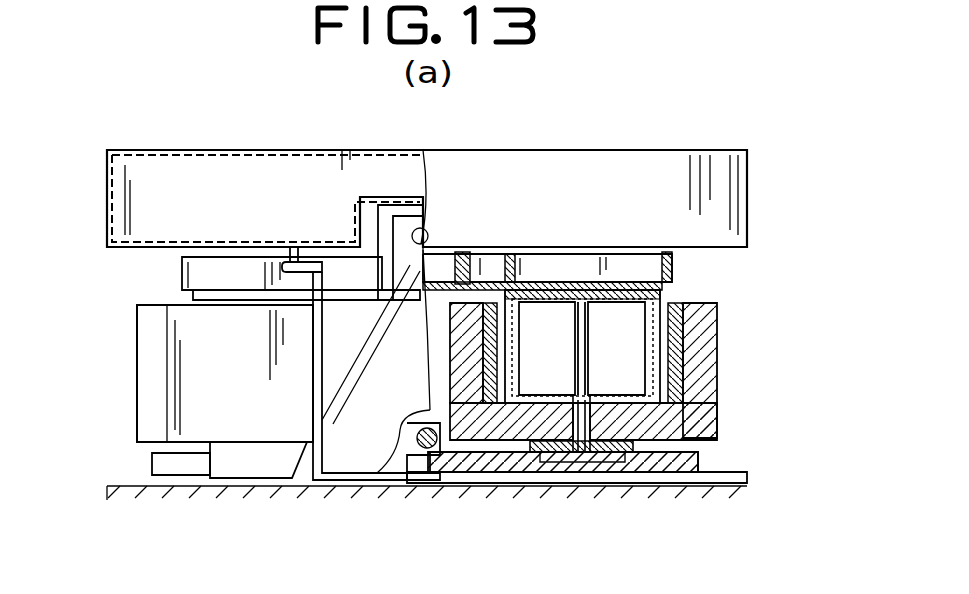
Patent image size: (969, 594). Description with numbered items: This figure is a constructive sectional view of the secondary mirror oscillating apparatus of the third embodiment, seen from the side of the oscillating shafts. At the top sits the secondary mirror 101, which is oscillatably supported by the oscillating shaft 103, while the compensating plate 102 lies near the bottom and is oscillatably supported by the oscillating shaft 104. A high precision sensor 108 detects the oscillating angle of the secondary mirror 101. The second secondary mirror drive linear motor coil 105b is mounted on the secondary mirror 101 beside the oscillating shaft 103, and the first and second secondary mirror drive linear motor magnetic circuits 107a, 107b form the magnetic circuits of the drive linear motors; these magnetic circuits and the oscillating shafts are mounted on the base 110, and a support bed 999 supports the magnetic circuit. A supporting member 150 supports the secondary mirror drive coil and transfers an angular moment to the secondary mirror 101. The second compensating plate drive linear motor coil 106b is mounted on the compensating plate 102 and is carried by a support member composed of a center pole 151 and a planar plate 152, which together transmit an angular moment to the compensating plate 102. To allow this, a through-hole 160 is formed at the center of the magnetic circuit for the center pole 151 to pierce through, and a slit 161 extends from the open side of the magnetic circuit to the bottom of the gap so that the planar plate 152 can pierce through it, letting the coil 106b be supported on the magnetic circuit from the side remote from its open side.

The secondary mirror 101 is at (633, 158).
The oscillating shaft 103 is at (425, 232).
The high precision sensor 108 is at (295, 250).
The second secondary mirror drive linear motor coil 105b is at (180, 296).
The first secondary mirror drive linear motor magnetic circuit 107a is at (145, 376).
The second secondary mirror drive linear motor magnetic circuit 107b is at (705, 394).
The second compensating plate drive linear motor coil 106b is at (640, 367).
The support bed 999 is at (247, 460).
The base 110 is at (355, 455).
The oscillating shaft 104 is at (427, 450).
The compensating plate 102 is at (690, 459).
The supporting member 150 is at (650, 268).
The planar plate 152 is at (548, 305).
The through-hole 160 is at (600, 420).
The slit 161 is at (632, 405).
The center pole 151 is at (585, 474).